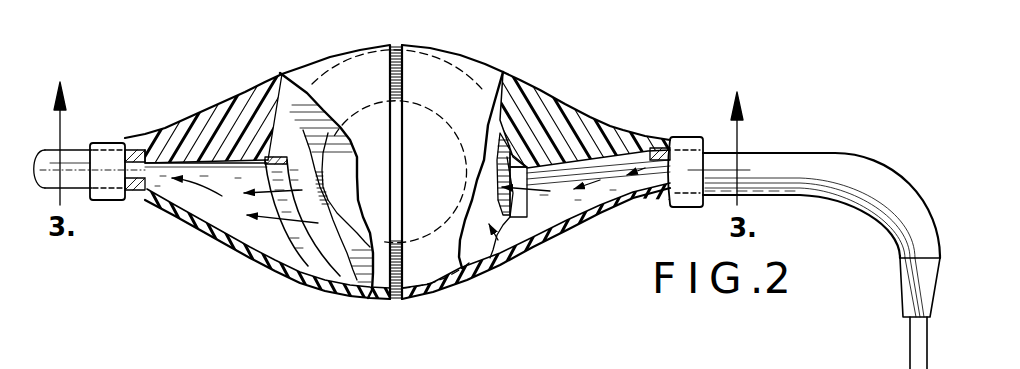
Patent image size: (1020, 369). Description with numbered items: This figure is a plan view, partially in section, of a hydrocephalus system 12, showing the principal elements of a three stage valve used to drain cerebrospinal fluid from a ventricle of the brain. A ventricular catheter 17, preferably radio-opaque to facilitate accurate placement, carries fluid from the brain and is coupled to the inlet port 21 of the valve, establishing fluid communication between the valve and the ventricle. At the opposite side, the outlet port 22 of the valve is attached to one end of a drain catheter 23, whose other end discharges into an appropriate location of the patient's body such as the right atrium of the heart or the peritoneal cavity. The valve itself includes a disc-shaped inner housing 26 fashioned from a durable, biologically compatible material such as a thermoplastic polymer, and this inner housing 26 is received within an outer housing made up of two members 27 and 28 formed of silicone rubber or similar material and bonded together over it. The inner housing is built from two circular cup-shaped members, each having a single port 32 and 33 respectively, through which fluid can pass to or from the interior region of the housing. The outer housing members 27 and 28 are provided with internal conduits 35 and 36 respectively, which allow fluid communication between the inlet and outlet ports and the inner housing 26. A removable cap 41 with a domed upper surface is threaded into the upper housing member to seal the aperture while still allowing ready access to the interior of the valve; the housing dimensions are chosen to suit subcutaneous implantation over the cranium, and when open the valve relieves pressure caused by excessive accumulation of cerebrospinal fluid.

The humidifier chamber housing 12 is at (343, 45).
The ventricular catheter 17 is at (875, 182).
The inlet port 21 is at (688, 137).
The outlet port 22 is at (108, 200).
The drain catheter 23 is at (78, 157).
The inner housing 26 is at (496, 232).
The outer housing member 27 is at (580, 220).
The outer housing member 28 is at (252, 250).
The port 32 is at (497, 247).
The port 33 is at (290, 235).
The internal conduit 35 is at (580, 198).
The internal conduit 36 is at (203, 203).
The removable cap 41 is at (440, 105).